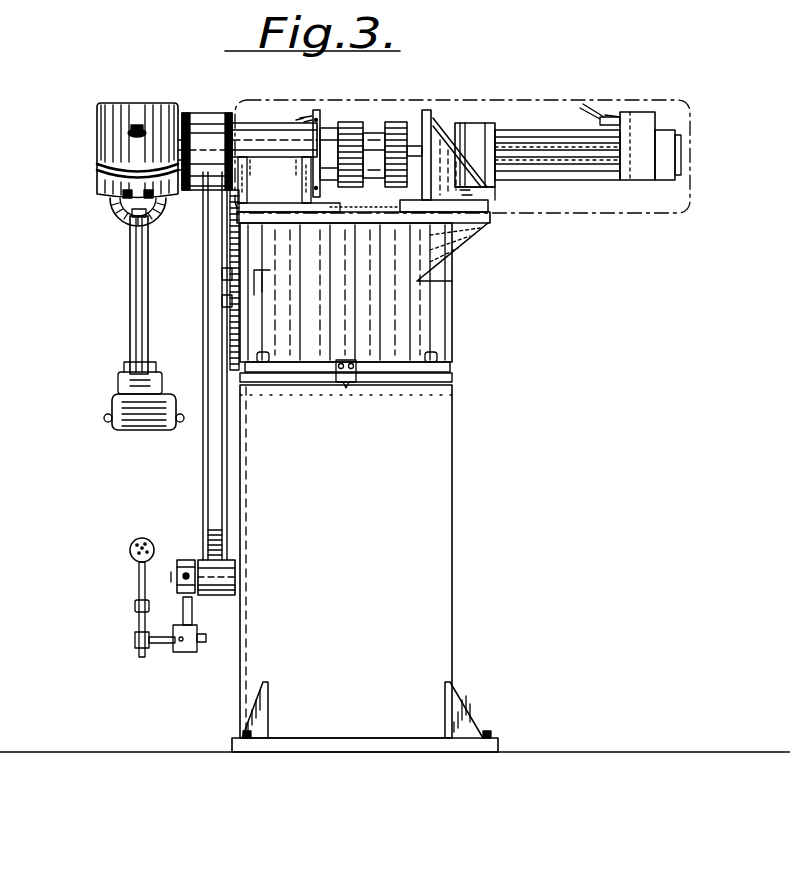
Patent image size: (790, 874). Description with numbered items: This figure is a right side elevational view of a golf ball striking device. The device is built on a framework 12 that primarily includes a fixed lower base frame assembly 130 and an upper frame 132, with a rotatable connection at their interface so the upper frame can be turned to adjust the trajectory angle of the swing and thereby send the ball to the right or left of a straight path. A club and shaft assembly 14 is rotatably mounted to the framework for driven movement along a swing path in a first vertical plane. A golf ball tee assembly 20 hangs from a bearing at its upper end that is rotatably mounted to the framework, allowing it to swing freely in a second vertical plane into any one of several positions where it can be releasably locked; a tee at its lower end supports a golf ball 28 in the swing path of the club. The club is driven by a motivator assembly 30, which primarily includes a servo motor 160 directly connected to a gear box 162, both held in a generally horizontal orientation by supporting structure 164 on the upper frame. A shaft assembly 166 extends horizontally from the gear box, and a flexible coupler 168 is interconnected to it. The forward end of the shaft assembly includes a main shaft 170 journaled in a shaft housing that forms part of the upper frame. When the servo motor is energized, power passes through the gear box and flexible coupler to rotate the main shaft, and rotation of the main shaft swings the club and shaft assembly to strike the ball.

The framework 12 is at (455, 488).
The club and shaft assembly 14 is at (131, 307).
The golf ball tee assembly 20 is at (205, 513).
The golf ball 28 is at (128, 553).
The motivator assembly 30 is at (530, 131).
The lower base frame assembly 130 is at (430, 432).
The upper frame 132 is at (478, 317).
The servo motor 160 is at (560, 137).
The gear box 162 is at (473, 140).
The structure for supporting the servo motor and gear box 164 is at (565, 249).
The shaft assembly 166 is at (418, 150).
The flexible coupler 168 is at (372, 127).
The main shaft 170 is at (320, 143).